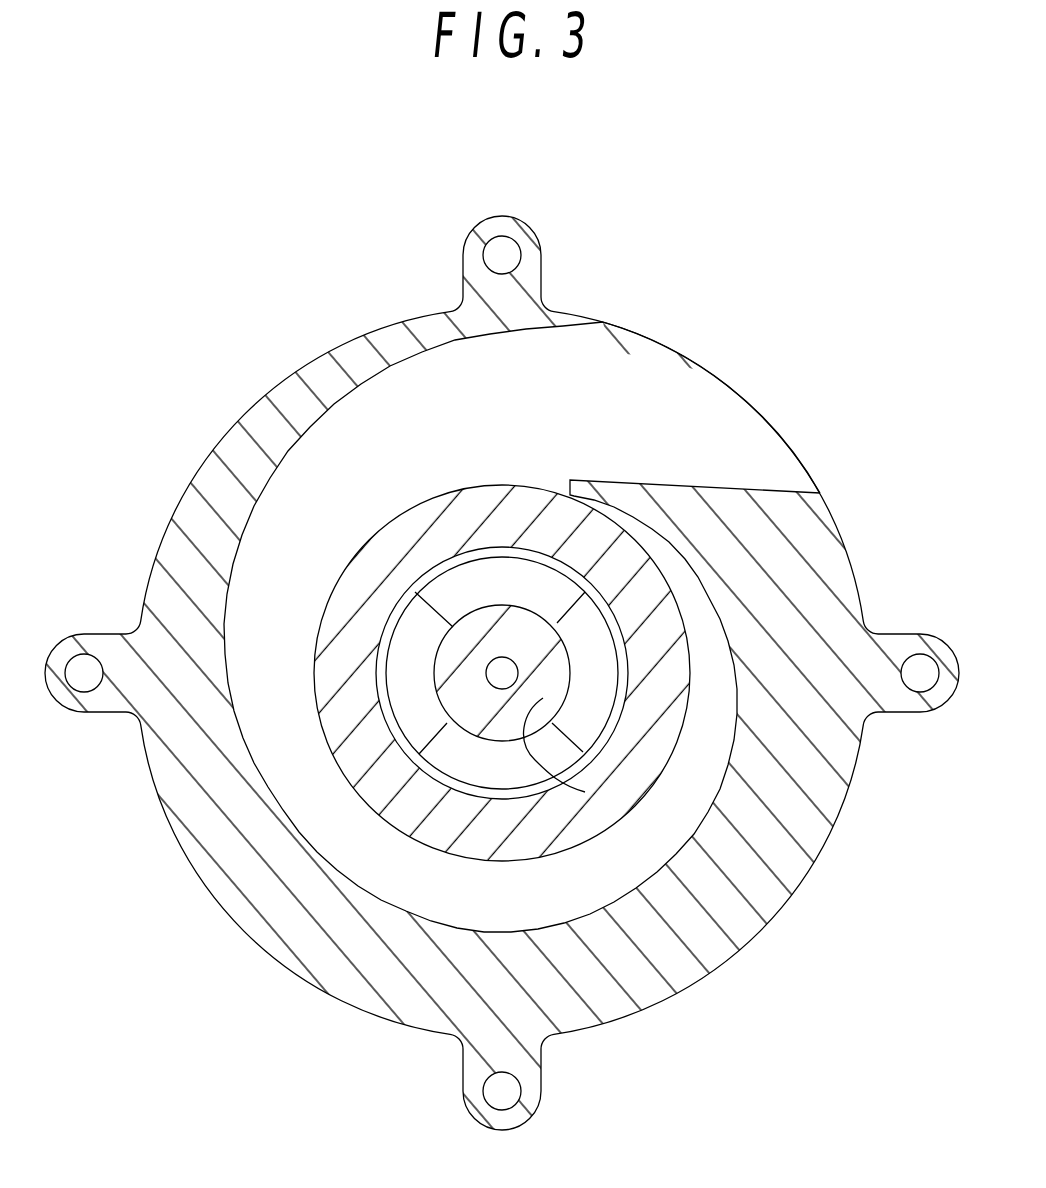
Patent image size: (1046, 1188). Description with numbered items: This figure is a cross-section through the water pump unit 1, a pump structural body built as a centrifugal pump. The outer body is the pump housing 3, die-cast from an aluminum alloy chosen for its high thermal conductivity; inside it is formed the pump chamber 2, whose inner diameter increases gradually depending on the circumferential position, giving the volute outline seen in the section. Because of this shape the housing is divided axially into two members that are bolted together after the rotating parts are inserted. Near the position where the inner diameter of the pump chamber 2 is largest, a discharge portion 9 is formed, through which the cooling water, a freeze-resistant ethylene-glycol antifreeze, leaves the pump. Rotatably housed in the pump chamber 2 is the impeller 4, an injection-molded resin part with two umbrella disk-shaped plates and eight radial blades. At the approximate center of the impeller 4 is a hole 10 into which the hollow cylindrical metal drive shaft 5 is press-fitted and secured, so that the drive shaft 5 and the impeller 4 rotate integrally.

The water pump unit 1 is at (722, 212).
The pump chamber 2 is at (380, 438).
The pump housing 3 is at (860, 580).
The impeller 4 is at (360, 763).
The drive shaft 5 is at (450, 667).
The discharge portion 9 is at (707, 425).
The hole 10 is at (895, 778).